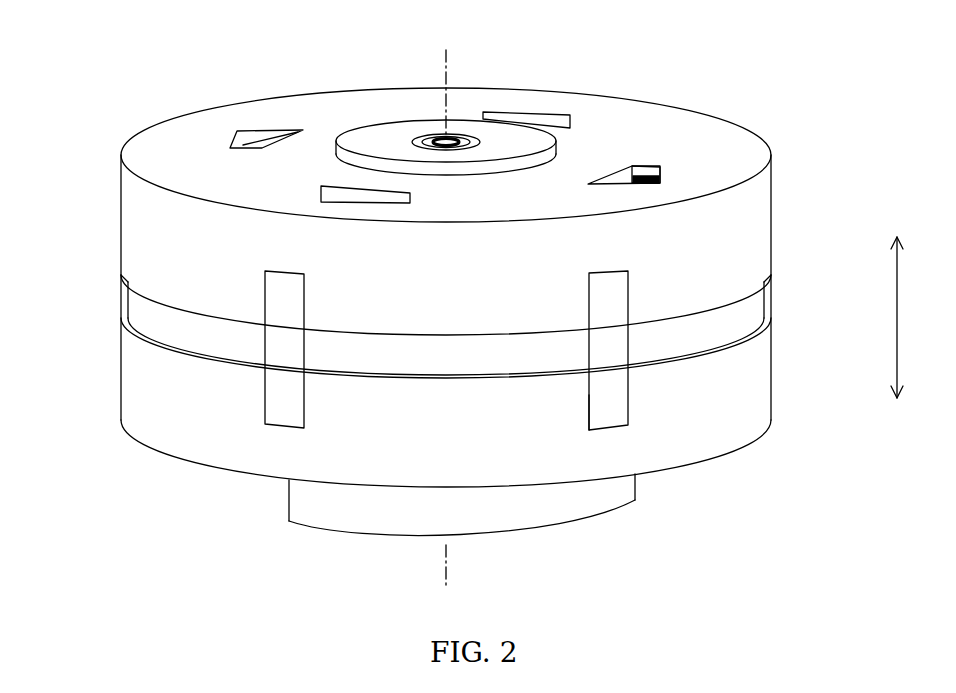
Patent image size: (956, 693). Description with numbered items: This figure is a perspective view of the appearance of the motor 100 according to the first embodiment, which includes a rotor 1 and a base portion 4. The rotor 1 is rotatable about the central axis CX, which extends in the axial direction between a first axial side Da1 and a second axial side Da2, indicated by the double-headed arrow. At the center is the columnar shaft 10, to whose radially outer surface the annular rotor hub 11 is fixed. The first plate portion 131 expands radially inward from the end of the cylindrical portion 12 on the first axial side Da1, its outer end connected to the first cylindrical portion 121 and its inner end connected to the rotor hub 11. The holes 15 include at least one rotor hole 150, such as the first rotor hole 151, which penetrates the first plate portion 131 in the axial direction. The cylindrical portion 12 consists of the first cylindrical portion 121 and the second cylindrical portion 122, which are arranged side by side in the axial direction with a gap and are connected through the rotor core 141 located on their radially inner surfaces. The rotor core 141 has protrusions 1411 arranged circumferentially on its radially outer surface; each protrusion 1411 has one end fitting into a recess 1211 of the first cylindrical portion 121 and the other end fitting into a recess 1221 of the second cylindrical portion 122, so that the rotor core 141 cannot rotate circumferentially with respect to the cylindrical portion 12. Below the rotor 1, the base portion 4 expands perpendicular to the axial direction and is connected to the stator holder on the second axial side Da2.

The motor 100 is at (247, 80).
The rotor 1 is at (153, 121).
The shaft 10 is at (430, 137).
The rotor hub 11 is at (378, 138).
The cylindrical portion 12 is at (50, 222).
The first cylindrical portion 121 is at (136, 240).
The second cylindrical portion 122 is at (136, 392).
The first plate portion 131 is at (582, 138).
The rotor core 141 is at (752, 297).
The protrusion 1411 is at (612, 348).
The recess 1211 is at (632, 292).
The recess 1221 is at (632, 386).
The holes 15 is at (665, 167).
The rotor hole 150 is at (632, 157).
The first rotor hole 151 is at (645, 163).
The base portion 4 is at (580, 520).
The central axis CX is at (449, 307).
The first axial side Da1 is at (898, 303).
The second axial side Da2 is at (898, 420).